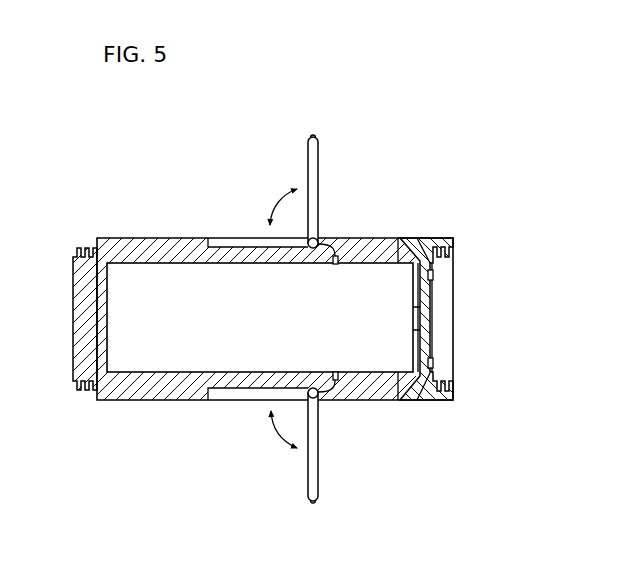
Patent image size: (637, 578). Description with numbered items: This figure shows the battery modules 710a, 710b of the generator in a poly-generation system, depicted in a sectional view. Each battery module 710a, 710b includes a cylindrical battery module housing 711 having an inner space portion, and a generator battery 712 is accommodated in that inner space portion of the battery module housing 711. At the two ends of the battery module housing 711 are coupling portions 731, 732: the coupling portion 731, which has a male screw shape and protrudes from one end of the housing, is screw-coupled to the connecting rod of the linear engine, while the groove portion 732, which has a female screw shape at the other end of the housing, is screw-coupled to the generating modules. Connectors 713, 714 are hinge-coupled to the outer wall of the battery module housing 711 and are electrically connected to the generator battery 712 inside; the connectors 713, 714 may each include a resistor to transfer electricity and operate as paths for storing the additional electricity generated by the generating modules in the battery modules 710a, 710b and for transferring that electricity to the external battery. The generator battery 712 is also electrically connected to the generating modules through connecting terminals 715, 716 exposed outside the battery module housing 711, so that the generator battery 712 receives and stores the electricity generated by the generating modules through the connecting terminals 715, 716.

The battery module 710a is at (422, 118).
The battery module 710b is at (266, 319).
The battery module housing 711 is at (148, 401).
The generator battery 712 is at (376, 353).
The connector 713 is at (319, 478).
The connector 714 is at (319, 180).
The connecting terminal 715 is at (433, 364).
The connecting terminal 716 is at (433, 274).
The coupling portion 731 is at (88, 317).
The groove portion 732 is at (437, 320).